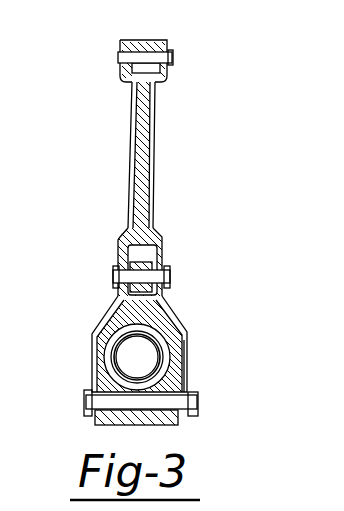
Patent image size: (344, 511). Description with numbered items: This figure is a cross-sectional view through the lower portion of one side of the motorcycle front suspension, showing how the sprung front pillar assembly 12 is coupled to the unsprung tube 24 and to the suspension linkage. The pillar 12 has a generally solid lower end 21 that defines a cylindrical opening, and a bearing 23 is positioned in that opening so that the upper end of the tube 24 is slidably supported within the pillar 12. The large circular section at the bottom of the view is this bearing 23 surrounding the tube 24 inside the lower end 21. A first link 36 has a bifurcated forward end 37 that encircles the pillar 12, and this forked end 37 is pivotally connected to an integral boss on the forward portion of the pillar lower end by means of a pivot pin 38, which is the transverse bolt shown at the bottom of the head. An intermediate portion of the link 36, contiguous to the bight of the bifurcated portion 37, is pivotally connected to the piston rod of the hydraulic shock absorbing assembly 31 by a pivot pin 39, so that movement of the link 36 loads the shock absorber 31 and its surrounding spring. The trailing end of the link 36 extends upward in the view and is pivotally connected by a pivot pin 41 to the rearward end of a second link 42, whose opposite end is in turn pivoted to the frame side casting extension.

The front pillar assembly 12 is at (92, 342).
The lower end 21 is at (110, 380).
The bearing 23 is at (168, 367).
The tube 24 is at (187, 330).
The hydraulic shock absorbing assembly 31 is at (143, 258).
The first link 36 is at (153, 232).
The bifurcated forward end 37 is at (185, 348).
The pivot pin 38 is at (87, 404).
The pivot pin 39 is at (170, 277).
The pivot pin 41 is at (173, 60).
The second link 42 is at (130, 83).